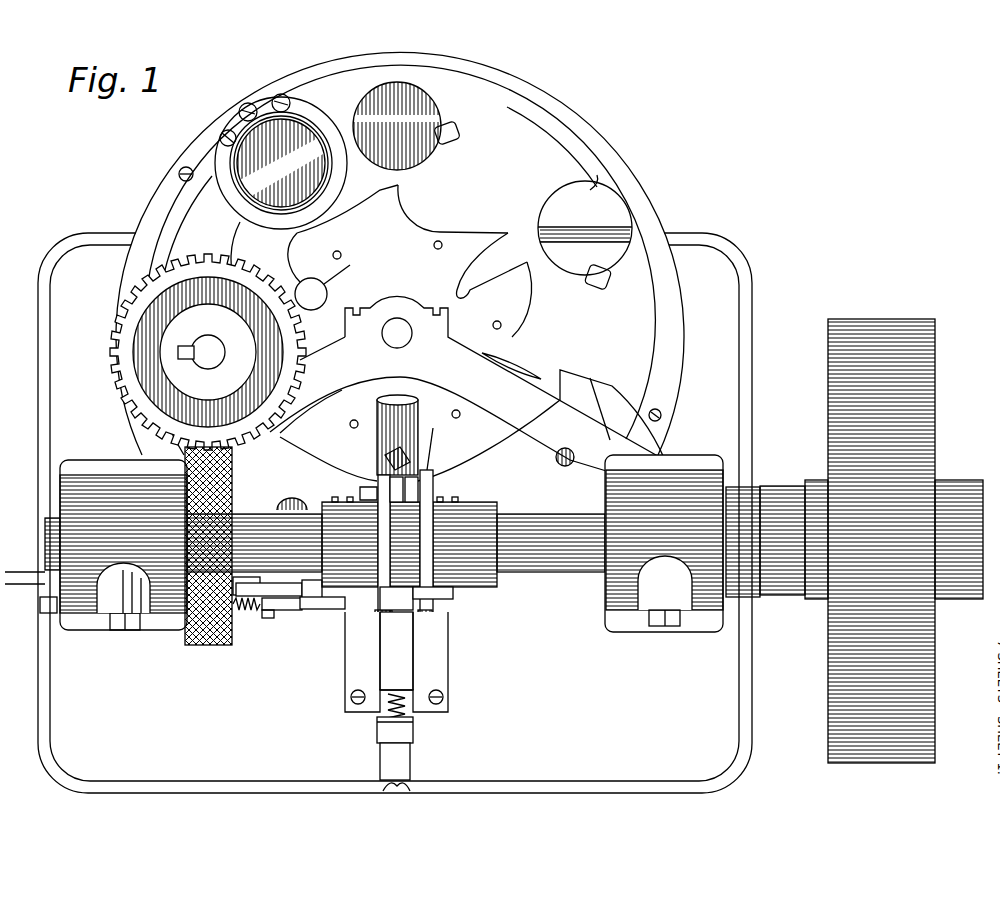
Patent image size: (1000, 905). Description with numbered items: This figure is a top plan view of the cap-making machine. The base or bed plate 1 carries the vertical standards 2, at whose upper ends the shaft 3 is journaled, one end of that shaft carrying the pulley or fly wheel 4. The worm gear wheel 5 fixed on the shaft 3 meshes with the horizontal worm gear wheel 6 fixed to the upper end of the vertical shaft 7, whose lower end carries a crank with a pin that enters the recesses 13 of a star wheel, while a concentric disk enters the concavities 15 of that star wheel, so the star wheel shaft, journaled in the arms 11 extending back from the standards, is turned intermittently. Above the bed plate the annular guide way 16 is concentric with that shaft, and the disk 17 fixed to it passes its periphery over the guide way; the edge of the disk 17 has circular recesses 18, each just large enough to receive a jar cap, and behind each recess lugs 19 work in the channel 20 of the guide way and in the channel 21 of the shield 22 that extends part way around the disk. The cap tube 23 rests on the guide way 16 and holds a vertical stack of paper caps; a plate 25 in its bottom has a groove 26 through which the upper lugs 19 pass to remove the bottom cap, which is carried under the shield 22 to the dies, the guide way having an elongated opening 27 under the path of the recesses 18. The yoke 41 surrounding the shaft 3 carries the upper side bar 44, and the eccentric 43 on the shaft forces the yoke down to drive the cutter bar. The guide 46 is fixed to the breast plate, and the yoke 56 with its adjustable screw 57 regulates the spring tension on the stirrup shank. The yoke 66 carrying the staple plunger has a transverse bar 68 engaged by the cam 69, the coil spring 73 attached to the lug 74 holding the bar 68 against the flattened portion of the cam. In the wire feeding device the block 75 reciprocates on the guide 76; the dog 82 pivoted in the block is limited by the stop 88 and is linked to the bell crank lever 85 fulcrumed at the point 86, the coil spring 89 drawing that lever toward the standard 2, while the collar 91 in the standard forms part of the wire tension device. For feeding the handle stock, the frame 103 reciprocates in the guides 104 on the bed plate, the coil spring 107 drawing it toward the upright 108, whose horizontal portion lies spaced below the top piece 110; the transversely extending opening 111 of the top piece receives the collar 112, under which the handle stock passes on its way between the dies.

The base or bed plate 1 is at (746, 277).
The vertical standards 2 is at (165, 614).
The shaft 3 is at (44, 548).
The pulley or fly wheel 4 is at (854, 541).
The worm gear wheel 5 is at (210, 642).
The horizontal worm gear wheel 6 is at (108, 352).
The vertical shaft 7 is at (206, 342).
The arms 11 is at (470, 384).
The recesses 13 is at (411, 268).
The concavities 15 is at (340, 230).
The annular guide way 16 is at (645, 218).
The disk 17 is at (381, 267).
The circular recesses 18 is at (432, 156).
The lugs 19 is at (460, 135).
The channel 20 is at (424, 117).
The channel 21 is at (516, 495).
The shield 22 is at (584, 382).
The cap tube 23 is at (289, 115).
The plate 25 is at (253, 140).
The groove 26 is at (293, 157).
The elongated opening 27 is at (622, 196).
The yoke 41 is at (420, 488).
The eccentric 43 is at (435, 646).
The upper side bar 44 is at (433, 556).
The guide 46 is at (442, 594).
The yoke 56 is at (442, 438).
The adjustable screw 57 is at (405, 400).
The yoke 66 is at (405, 485).
The transversely extending bar 68 is at (378, 554).
The cam 69 is at (378, 620).
The coil spring 73 is at (384, 468).
The lug 74 is at (384, 478).
The block 75 is at (248, 580).
The guide 76 is at (314, 580).
The dog 82 is at (270, 620).
The bell crank lever 85 is at (292, 612).
The fulcrum point 86 is at (318, 612).
The stop 88 is at (238, 585).
The coil spring 89 is at (250, 616).
The collar 91 is at (36, 572).
The frame 103 is at (397, 651).
The guides 104 is at (350, 680).
The coil spring 107 is at (408, 708).
The upright 108 is at (415, 782).
The top piece 110 is at (412, 762).
The transversely extending opening 111 is at (382, 722).
The collar 112 is at (413, 732).